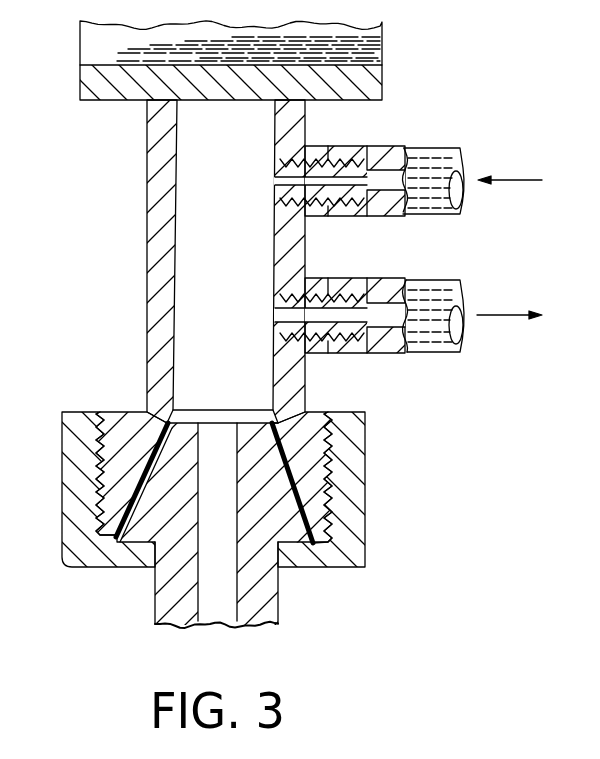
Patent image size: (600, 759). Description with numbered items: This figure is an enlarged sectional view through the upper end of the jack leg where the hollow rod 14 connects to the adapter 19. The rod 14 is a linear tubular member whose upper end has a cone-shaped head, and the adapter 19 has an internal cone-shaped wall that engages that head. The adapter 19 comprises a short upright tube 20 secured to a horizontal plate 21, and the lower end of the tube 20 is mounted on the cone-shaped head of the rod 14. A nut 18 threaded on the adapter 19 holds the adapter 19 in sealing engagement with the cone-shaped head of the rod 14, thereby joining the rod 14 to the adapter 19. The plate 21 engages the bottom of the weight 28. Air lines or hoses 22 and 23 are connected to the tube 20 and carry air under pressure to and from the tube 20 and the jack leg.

The hollow rod 14 is at (175, 610).
The nut 18 is at (62, 516).
The adapter 19 is at (120, 428).
The upright tube 20 is at (147, 237).
The horizontal plate 21 is at (102, 90).
The air line 22 is at (433, 160).
The air line 23 is at (432, 348).
The weight 28 is at (385, 44).